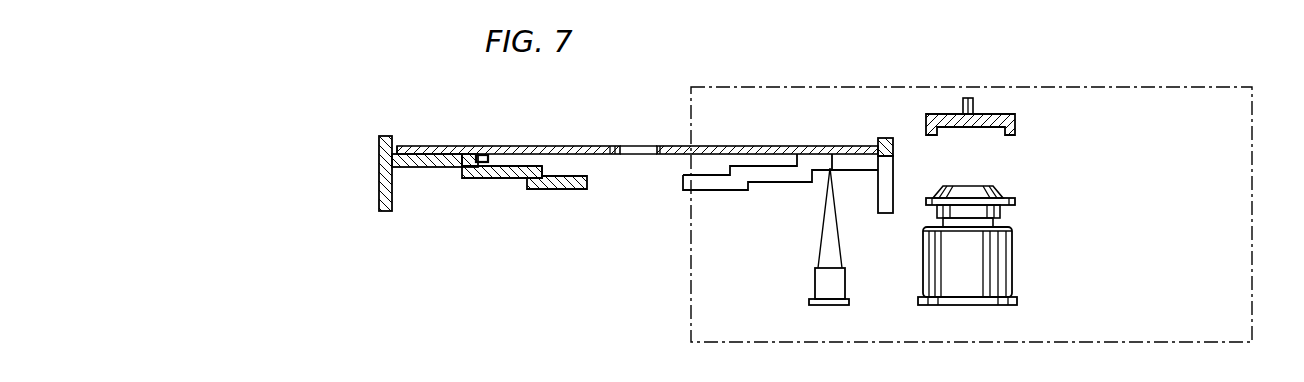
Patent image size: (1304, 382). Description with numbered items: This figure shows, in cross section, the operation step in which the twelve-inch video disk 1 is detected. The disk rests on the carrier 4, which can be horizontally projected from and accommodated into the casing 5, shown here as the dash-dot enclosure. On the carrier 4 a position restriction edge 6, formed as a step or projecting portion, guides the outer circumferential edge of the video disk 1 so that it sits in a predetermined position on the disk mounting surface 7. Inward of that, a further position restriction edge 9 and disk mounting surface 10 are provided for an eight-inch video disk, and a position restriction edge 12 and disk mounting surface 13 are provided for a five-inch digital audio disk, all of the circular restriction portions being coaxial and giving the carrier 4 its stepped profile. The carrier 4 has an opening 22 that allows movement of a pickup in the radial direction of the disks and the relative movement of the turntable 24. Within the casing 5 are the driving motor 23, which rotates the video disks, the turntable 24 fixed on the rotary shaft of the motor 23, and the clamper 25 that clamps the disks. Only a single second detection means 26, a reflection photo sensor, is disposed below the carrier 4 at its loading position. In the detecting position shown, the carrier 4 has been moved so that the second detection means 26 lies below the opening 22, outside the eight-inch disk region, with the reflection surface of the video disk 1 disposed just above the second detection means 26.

The video disk 1 is at (452, 137).
The carrier 4 is at (368, 180).
The casing 5 is at (1272, 126).
The position restriction edge 6 is at (397, 142).
The disk mounting surface 7 is at (425, 150).
The position restriction edge 9 is at (490, 150).
The disk mounting surface 10 is at (510, 170).
The position restriction edge 12 is at (545, 170).
The disk mounting surface 13 is at (568, 180).
The opening 22 is at (739, 182).
The driving motor 23 is at (1007, 277).
The turntable 24 is at (1015, 202).
The clamper 25 is at (1000, 114).
The second detection means 26 is at (822, 285).